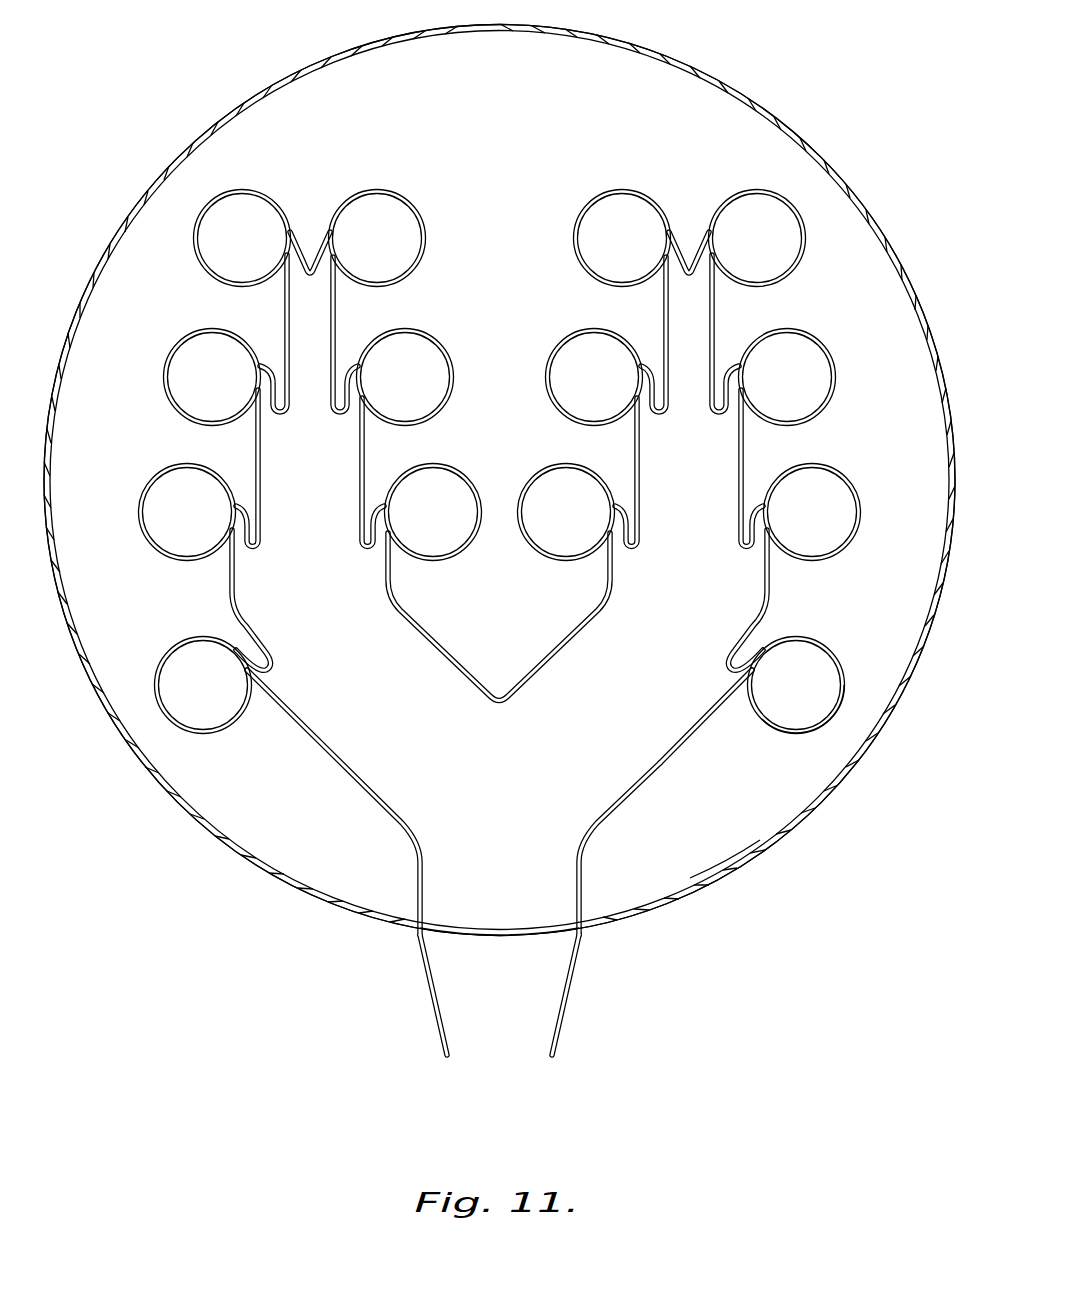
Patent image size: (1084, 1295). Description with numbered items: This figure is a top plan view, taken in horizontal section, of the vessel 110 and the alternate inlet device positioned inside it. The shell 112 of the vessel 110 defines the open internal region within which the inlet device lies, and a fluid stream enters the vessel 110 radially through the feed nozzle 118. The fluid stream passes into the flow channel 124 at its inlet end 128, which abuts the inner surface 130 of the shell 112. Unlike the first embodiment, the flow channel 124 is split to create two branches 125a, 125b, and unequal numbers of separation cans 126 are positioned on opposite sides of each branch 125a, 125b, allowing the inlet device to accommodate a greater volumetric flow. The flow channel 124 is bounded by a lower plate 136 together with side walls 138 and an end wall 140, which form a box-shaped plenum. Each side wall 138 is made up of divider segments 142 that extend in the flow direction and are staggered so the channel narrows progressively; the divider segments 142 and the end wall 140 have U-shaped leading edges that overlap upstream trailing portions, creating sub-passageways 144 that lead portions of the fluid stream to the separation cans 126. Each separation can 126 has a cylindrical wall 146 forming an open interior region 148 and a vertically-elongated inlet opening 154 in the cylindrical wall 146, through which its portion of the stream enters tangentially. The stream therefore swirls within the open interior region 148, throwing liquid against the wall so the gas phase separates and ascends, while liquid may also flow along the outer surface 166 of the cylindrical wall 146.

The vessel 110 is at (725, 83).
The shell 112 is at (798, 143).
The feed nozzle 118 is at (425, 1060).
The flow channel 124 is at (498, 815).
The branch 125a is at (595, 697).
The branch 125b is at (382, 695).
The separation can 126 is at (827, 632).
The inlet end 128 is at (548, 930).
The inner surface 130 is at (716, 870).
The lower plate 136 is at (660, 725).
The side wall 138 is at (383, 802).
The end wall 140 is at (687, 281).
The divider segment 142 is at (637, 450).
The sub-passageway 144 is at (698, 280).
The cylindrical wall 146 is at (813, 731).
The open interior region 148 is at (825, 500).
The inlet opening 154 is at (738, 384).
The outer surface 166 is at (843, 700).